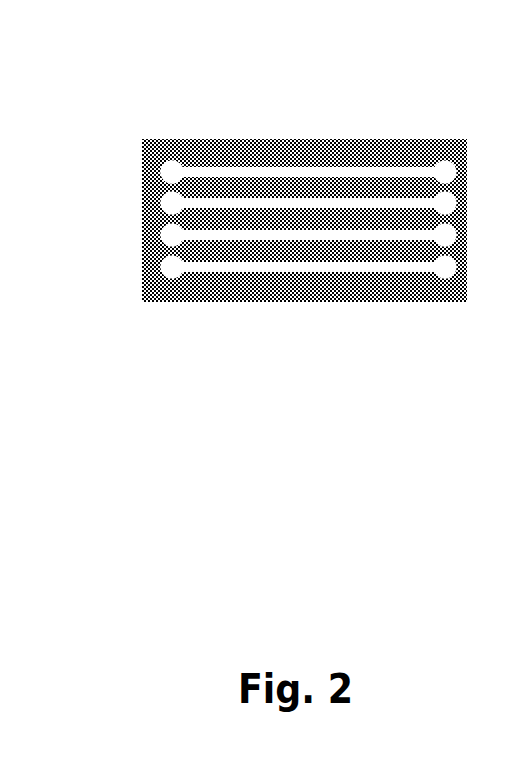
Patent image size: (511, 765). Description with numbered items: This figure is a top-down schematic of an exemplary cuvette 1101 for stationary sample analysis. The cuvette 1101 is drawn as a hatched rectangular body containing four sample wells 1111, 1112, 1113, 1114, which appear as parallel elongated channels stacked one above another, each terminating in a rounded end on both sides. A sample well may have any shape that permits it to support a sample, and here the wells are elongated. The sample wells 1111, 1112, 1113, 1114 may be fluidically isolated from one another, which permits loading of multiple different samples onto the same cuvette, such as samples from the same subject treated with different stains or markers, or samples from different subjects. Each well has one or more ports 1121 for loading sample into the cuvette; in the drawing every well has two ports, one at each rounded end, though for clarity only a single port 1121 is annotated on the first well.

The cuvette 1101 is at (304, 173).
The sample well 1111 is at (141, 176).
The sample well 1112 is at (141, 208).
The sample well 1113 is at (141, 241).
The sample well 1114 is at (141, 273).
The port 1121 is at (161, 123).